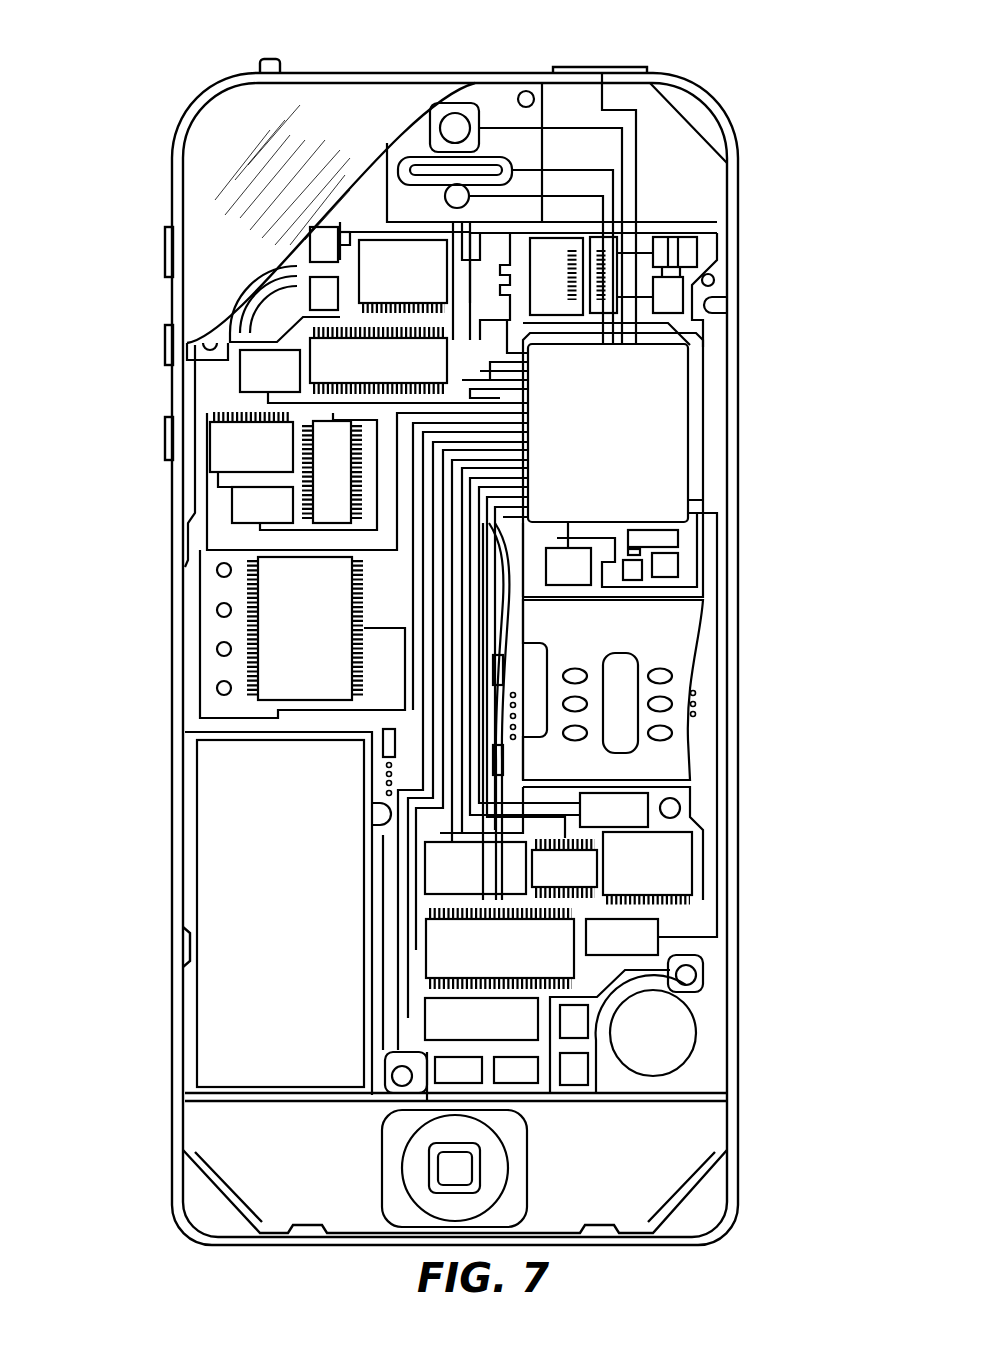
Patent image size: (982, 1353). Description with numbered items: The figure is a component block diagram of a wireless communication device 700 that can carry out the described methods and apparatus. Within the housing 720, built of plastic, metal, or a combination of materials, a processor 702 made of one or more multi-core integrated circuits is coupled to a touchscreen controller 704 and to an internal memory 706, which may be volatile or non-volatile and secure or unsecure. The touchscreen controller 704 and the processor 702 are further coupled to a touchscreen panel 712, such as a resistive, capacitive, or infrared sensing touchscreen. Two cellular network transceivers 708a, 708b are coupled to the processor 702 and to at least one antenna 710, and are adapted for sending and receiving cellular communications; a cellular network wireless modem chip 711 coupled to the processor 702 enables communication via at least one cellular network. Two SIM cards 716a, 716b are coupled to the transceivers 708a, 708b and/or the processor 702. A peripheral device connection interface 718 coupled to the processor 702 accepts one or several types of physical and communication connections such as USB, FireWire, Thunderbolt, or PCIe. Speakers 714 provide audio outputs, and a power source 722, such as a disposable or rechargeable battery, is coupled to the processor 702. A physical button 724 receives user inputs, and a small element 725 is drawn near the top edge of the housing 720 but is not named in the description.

The wireless communication device 700 is at (125, 60).
The processor 702 is at (557, 685).
The touchscreen controller 704 is at (403, 274).
The internal memory 706 is at (302, 634).
The cellular network transceiver 708a is at (630, 245).
The cellular network transceiver 708b is at (367, 481).
The antenna 710 is at (668, 300).
The cellular network wireless modem chip 711 is at (500, 948).
The touchscreen panel 712 is at (213, 170).
The speakers 714 is at (405, 165).
The SIM card 716a is at (571, 843).
The SIM card 716b is at (622, 937).
The peripheral device connection interface 718 is at (481, 1019).
The housing 720 is at (742, 1125).
The power source 722 is at (290, 912).
The physical button 724 is at (462, 1177).
The button 725 is at (600, 70).